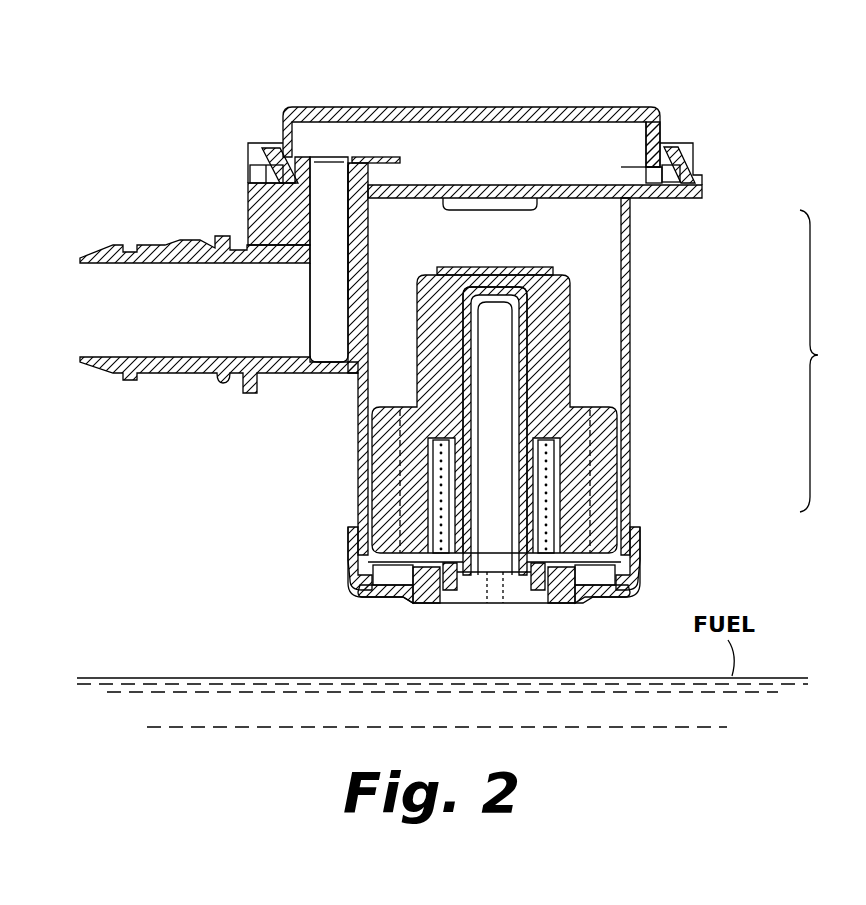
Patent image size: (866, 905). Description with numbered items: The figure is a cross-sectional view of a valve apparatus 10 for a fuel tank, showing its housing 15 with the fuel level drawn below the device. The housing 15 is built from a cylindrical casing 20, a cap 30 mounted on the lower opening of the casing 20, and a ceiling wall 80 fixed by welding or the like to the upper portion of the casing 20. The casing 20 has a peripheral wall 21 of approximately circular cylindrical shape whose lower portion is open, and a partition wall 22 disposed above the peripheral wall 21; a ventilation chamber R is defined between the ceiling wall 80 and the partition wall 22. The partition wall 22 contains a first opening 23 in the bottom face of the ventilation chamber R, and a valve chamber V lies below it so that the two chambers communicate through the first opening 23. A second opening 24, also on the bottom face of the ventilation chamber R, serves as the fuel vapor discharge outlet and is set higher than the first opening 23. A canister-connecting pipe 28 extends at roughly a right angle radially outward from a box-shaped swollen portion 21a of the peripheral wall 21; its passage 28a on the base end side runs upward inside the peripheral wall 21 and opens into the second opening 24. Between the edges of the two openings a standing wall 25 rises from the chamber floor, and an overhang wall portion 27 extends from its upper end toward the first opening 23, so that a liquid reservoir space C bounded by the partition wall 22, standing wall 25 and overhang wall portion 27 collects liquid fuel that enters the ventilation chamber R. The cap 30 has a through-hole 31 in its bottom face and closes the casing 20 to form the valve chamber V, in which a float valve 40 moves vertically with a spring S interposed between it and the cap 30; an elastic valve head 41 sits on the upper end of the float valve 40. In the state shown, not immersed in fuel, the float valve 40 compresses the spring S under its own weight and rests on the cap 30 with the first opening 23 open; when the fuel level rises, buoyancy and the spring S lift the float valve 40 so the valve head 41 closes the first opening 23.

The valve apparatus 10 is at (455, 97).
The housing 15 is at (822, 361).
The casing 20 is at (437, 299).
The peripheral wall 21 is at (627, 371).
The portion of the peripheral wall 21a is at (328, 373).
The partition wall 22 is at (577, 197).
The first opening 23 is at (517, 197).
The second opening 24 is at (327, 165).
The standing wall 25 is at (357, 167).
The overhang wall portion 27 is at (389, 157).
The canister-connecting pipe 28 is at (221, 378).
The passage 28a is at (330, 345).
The cap 30 is at (571, 567).
The through-hole 31 is at (430, 585).
The float valve 40 is at (382, 472).
The valve head 41 is at (538, 266).
The ceiling wall 80 is at (693, 160).
The ventilation chamber R is at (505, 166).
The valve chamber V is at (504, 247).
The liquid reservoir space C is at (383, 177).
The spring S is at (440, 521).